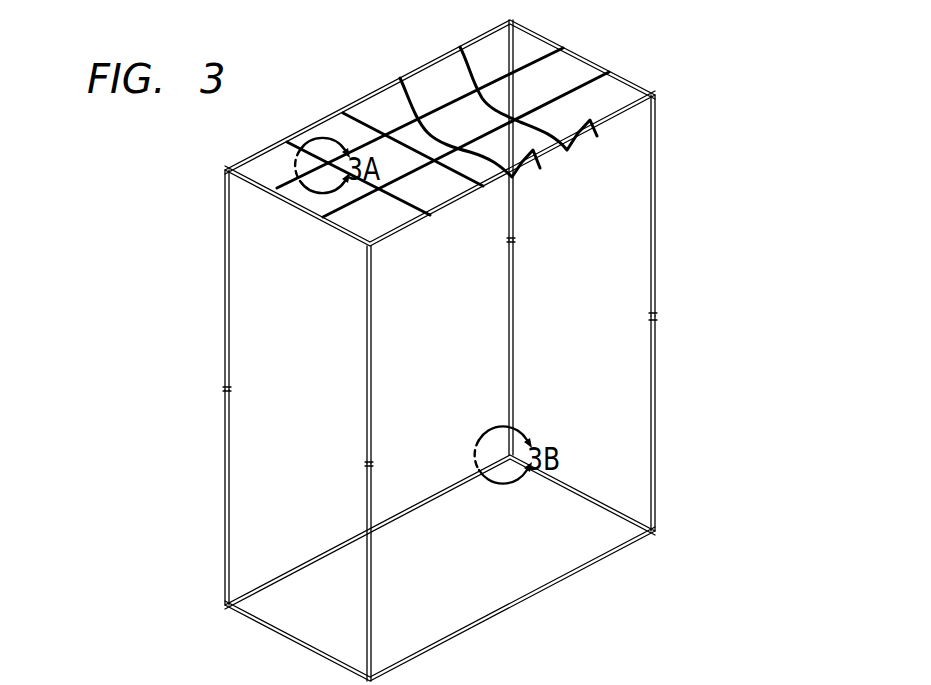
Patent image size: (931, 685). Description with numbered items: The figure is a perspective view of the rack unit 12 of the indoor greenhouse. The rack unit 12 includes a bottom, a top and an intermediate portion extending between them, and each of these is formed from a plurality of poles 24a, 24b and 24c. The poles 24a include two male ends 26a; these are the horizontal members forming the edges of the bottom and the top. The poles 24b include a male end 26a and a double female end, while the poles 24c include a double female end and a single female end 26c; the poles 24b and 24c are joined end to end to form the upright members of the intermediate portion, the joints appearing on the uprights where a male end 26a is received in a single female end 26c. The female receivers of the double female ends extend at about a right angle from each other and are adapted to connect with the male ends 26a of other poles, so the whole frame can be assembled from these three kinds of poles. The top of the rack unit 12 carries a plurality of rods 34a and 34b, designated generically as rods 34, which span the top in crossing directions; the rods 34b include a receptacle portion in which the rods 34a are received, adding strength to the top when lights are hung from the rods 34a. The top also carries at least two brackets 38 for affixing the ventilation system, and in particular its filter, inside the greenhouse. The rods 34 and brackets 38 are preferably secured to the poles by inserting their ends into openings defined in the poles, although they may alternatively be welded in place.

The rack unit 12 is at (158, 296).
The poles 24a is at (388, 84).
The poles 24b is at (512, 215).
The poles 24c is at (230, 435).
The male end 26a is at (225, 383).
The single female end 26c is at (225, 408).
The rods 34 is at (45, 681).
The rods 34a is at (276, 187).
The rods 34b is at (460, 175).
The brackets 38 is at (588, 120).